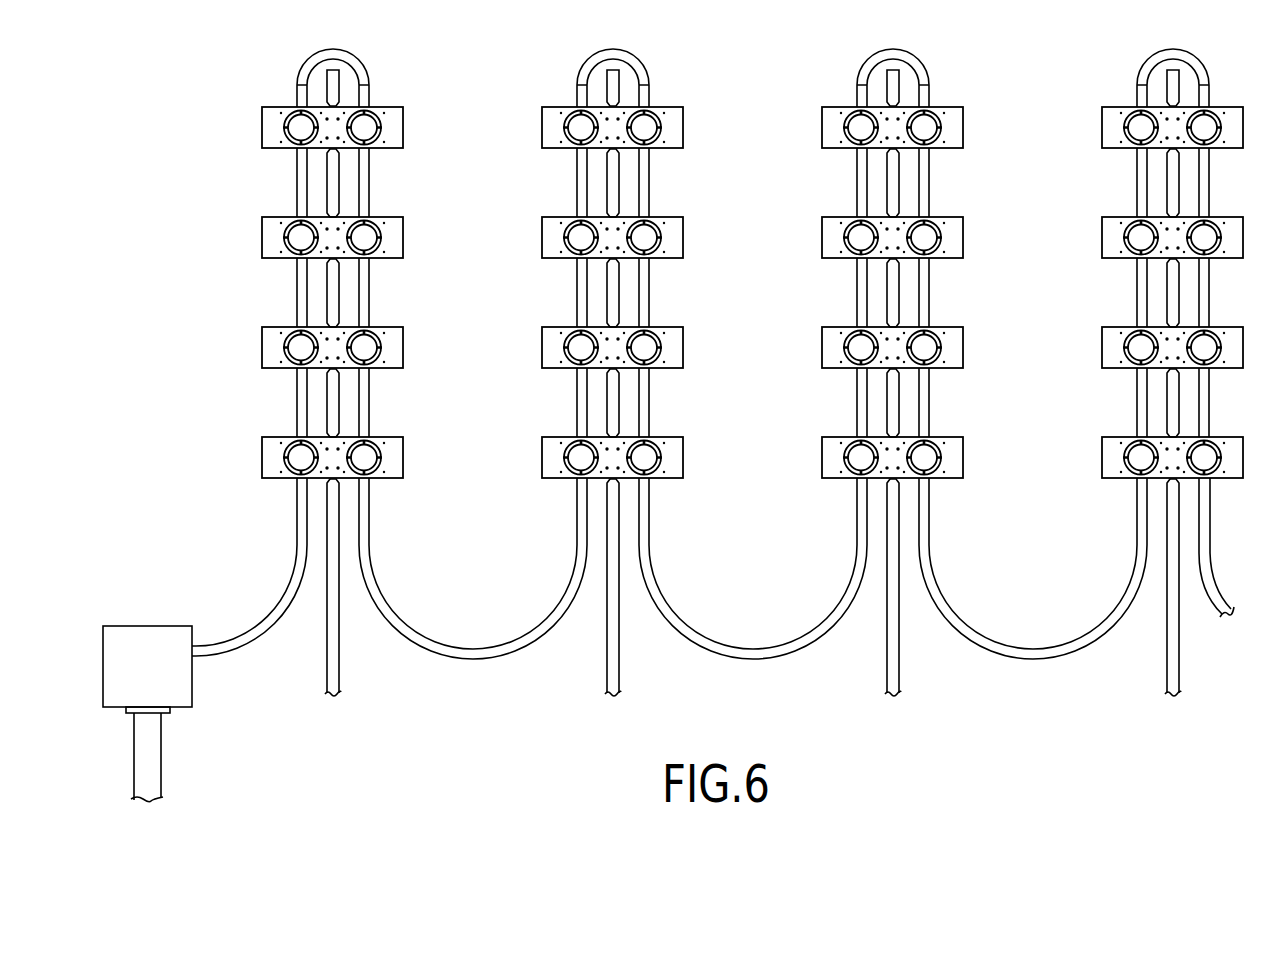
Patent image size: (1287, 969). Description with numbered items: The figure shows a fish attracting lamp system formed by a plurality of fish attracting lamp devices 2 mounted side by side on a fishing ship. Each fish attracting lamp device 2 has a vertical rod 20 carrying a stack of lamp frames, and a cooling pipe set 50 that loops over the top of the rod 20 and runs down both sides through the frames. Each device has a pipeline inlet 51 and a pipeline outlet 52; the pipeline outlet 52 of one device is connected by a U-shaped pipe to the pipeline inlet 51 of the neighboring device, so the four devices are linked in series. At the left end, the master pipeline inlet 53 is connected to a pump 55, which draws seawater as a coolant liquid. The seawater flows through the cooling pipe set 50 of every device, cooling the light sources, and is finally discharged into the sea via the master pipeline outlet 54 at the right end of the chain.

The fish attracting lamp device 2 is at (264, 100).
The rod 20 is at (334, 188).
The cooling pipe set 50 is at (298, 172).
The pipeline inlet 51 is at (298, 482).
The pipeline outlet 52 is at (369, 482).
The master pipeline inlet 53 is at (200, 650).
The master pipeline outlet 54 is at (1220, 618).
The pump 55 is at (137, 632).